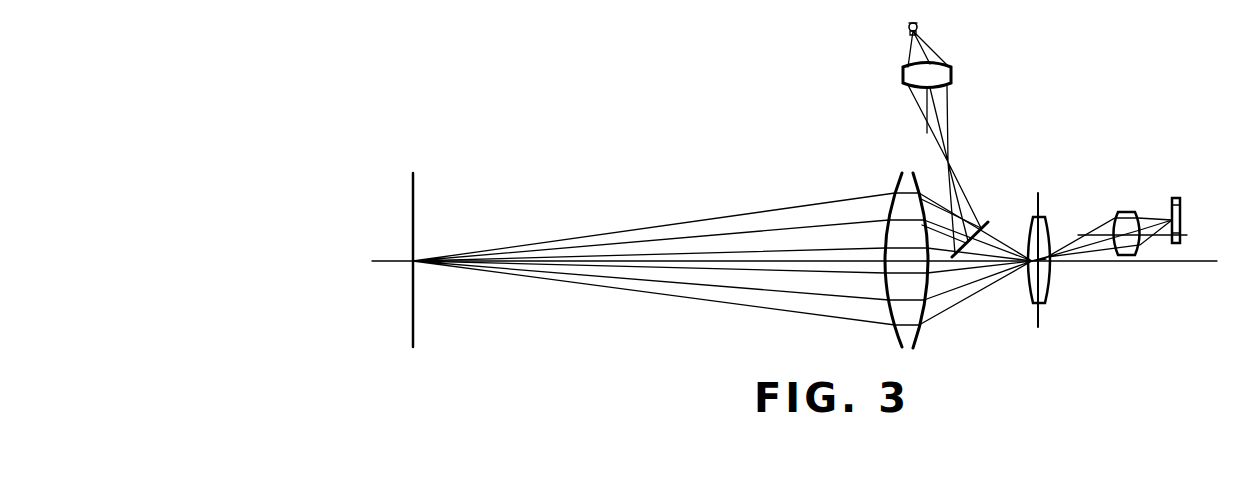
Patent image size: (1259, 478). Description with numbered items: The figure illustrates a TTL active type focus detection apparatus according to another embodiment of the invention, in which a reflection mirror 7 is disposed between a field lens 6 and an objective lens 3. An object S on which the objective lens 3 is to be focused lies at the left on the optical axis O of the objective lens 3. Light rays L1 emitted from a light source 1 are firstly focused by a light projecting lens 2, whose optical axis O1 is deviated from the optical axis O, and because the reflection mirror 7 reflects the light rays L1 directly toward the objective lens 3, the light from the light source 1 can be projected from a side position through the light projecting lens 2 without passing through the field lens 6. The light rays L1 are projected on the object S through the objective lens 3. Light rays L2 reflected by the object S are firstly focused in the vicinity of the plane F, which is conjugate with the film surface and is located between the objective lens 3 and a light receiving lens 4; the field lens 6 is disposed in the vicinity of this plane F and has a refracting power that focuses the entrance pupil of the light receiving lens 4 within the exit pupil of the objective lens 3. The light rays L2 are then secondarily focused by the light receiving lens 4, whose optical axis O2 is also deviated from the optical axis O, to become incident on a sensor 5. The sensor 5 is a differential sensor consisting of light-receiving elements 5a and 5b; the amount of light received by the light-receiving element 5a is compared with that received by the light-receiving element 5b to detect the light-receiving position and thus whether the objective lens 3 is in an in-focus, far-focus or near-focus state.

The light source 1 is at (924, 22).
The light rays L1 is at (929, 34).
The light projecting lens 2 is at (952, 73).
The optical axis of the light projecting lens O1 is at (927, 128).
The objective lens 3 is at (898, 184).
The optical axis O is at (710, 260).
The object S is at (413, 245).
The reflected light rays L2 is at (605, 287).
The reflection mirror 7 is at (989, 233).
The imaging plane F is at (1037, 245).
The optical axis of the light receiving lens O2 is at (1078, 235).
The light receiving lens 4 is at (1118, 212).
The sensor 5 is at (1178, 198).
The light-receiving element 5a is at (1181, 205).
The light-receiving element 5b is at (1181, 233).
The field lens 6 is at (1048, 287).